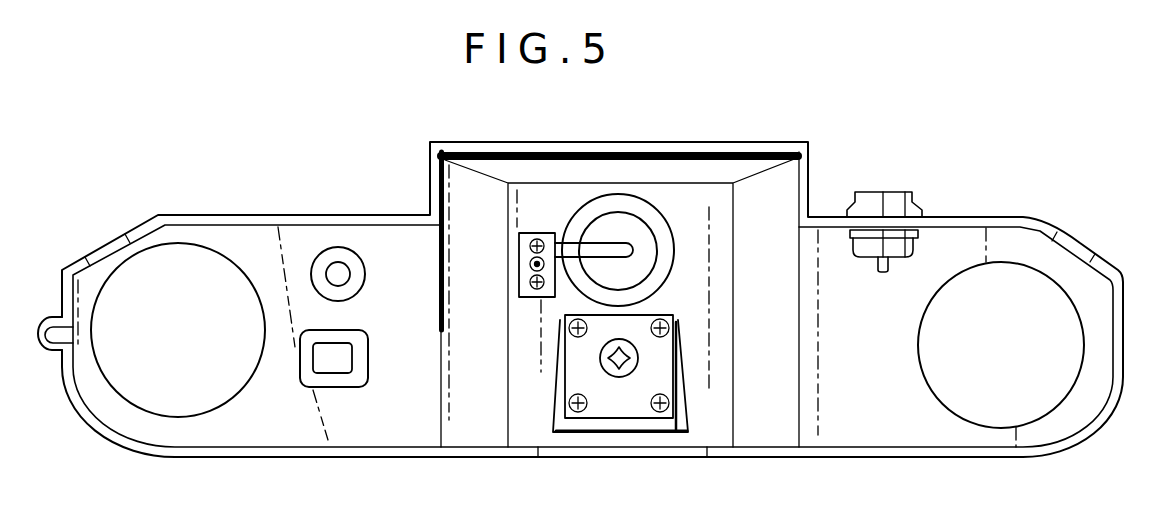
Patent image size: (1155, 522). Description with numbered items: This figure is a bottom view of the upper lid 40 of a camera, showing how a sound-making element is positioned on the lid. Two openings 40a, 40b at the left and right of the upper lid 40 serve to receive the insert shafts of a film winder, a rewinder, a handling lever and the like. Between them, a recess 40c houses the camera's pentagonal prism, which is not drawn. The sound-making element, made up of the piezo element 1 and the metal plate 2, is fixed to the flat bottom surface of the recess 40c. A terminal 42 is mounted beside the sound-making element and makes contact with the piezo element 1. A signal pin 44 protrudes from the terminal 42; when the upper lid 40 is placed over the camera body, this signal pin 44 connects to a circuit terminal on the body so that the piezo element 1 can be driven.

The piezo element 1 is at (608, 222).
The metal plate 2 is at (630, 203).
The upper lid 40 is at (1002, 240).
The opening 40a is at (193, 405).
The opening 40b is at (982, 412).
The recess 40c is at (690, 233).
The terminal 42 is at (520, 236).
The signal pin 44 is at (533, 264).